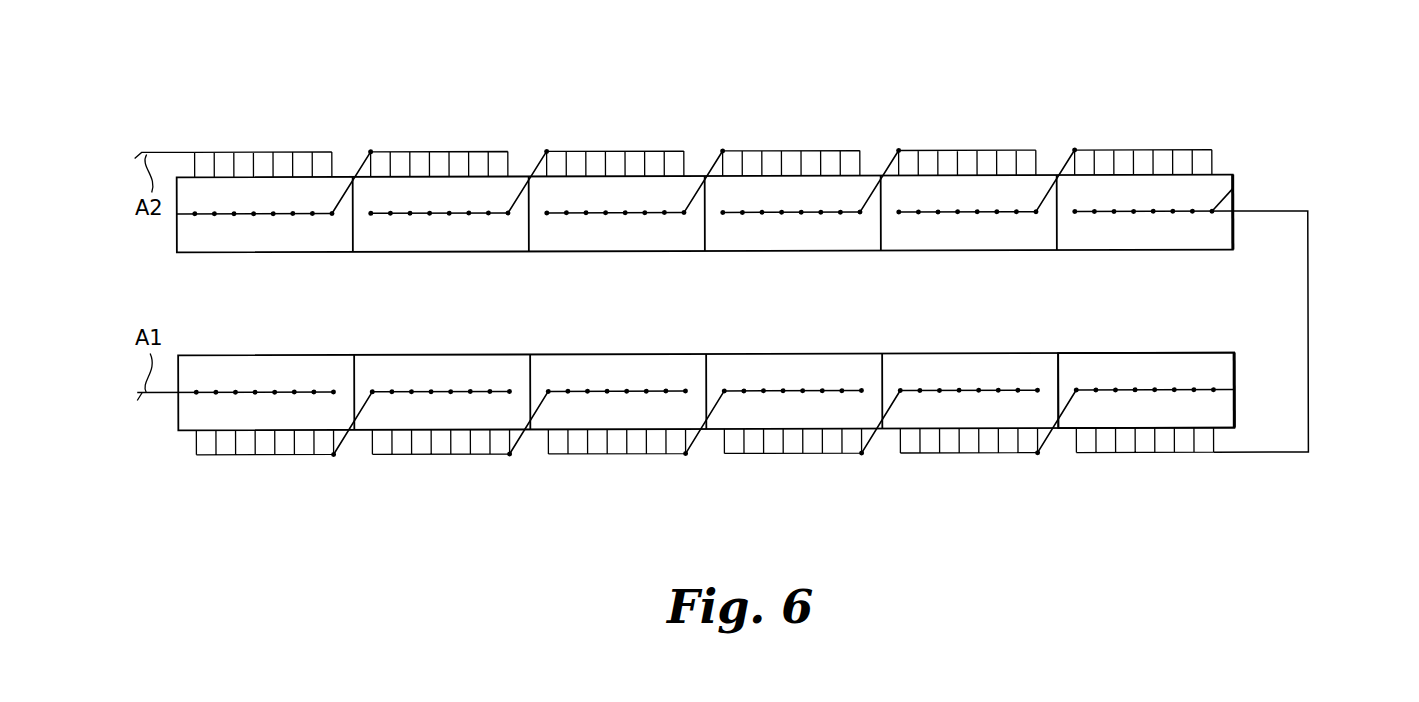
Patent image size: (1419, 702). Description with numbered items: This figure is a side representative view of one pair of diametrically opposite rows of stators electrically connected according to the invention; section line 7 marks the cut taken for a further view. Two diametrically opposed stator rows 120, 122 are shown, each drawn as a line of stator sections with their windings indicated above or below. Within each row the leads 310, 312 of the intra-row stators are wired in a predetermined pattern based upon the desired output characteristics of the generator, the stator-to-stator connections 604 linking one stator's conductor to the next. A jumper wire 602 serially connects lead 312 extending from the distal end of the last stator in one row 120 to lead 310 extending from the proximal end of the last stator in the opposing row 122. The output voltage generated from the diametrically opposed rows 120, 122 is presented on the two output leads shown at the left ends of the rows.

The section line 7- 7 is at (177, 3).
The stator row 120 is at (1253, 180).
The opposing stator row 122 is at (1257, 407).
The lead 310 is at (1220, 350).
The lead 312 is at (1233, 190).
The jumper wire 602 is at (1308, 250).
The sub-array interconnect via 604 is at (371, 151).